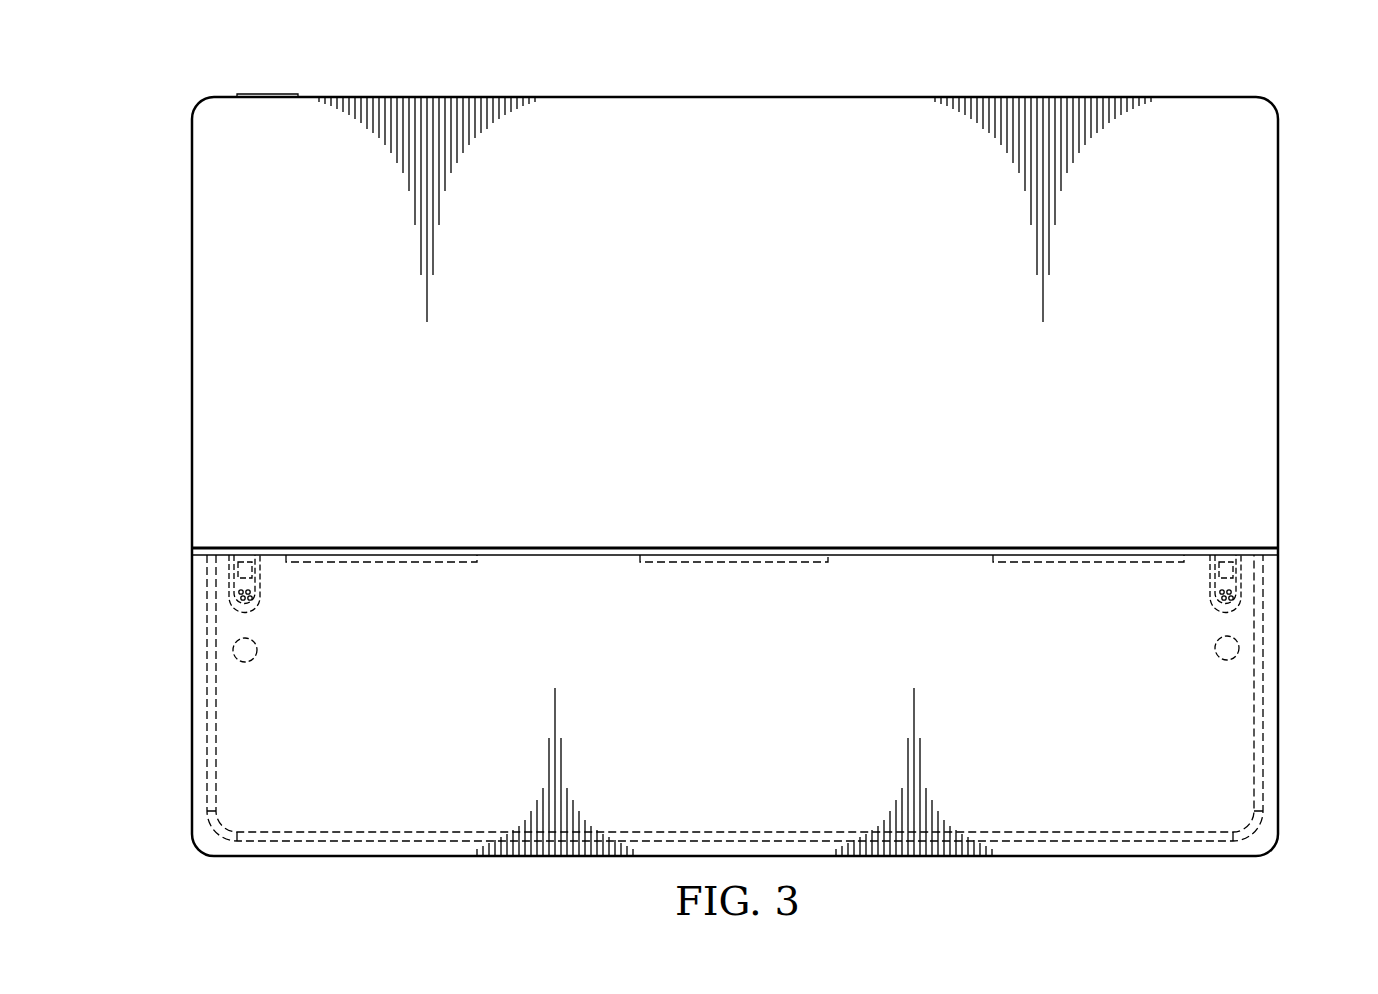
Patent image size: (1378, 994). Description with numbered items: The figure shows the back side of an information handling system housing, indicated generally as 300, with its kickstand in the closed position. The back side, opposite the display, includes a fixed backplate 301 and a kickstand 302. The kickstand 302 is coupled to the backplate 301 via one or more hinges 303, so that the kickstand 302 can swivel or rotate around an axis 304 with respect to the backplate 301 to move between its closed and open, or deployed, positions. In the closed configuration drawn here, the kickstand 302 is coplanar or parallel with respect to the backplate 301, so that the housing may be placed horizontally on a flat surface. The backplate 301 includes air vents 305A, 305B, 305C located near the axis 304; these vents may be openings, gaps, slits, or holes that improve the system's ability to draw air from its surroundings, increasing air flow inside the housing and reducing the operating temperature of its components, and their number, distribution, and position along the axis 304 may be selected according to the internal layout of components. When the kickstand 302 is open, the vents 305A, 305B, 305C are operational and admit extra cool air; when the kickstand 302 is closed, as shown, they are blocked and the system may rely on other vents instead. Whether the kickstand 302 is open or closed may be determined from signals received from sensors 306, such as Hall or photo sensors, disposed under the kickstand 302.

The computing device 300 is at (118, 88).
The backplate 301 is at (757, 324).
The kickstand 302 is at (757, 773).
The hinge 303 is at (260, 605).
The axis 304 is at (908, 548).
The air vent 305A is at (417, 563).
The air vent 305B is at (1055, 563).
The air vent 305C is at (740, 563).
The sensor 306 is at (232, 646).